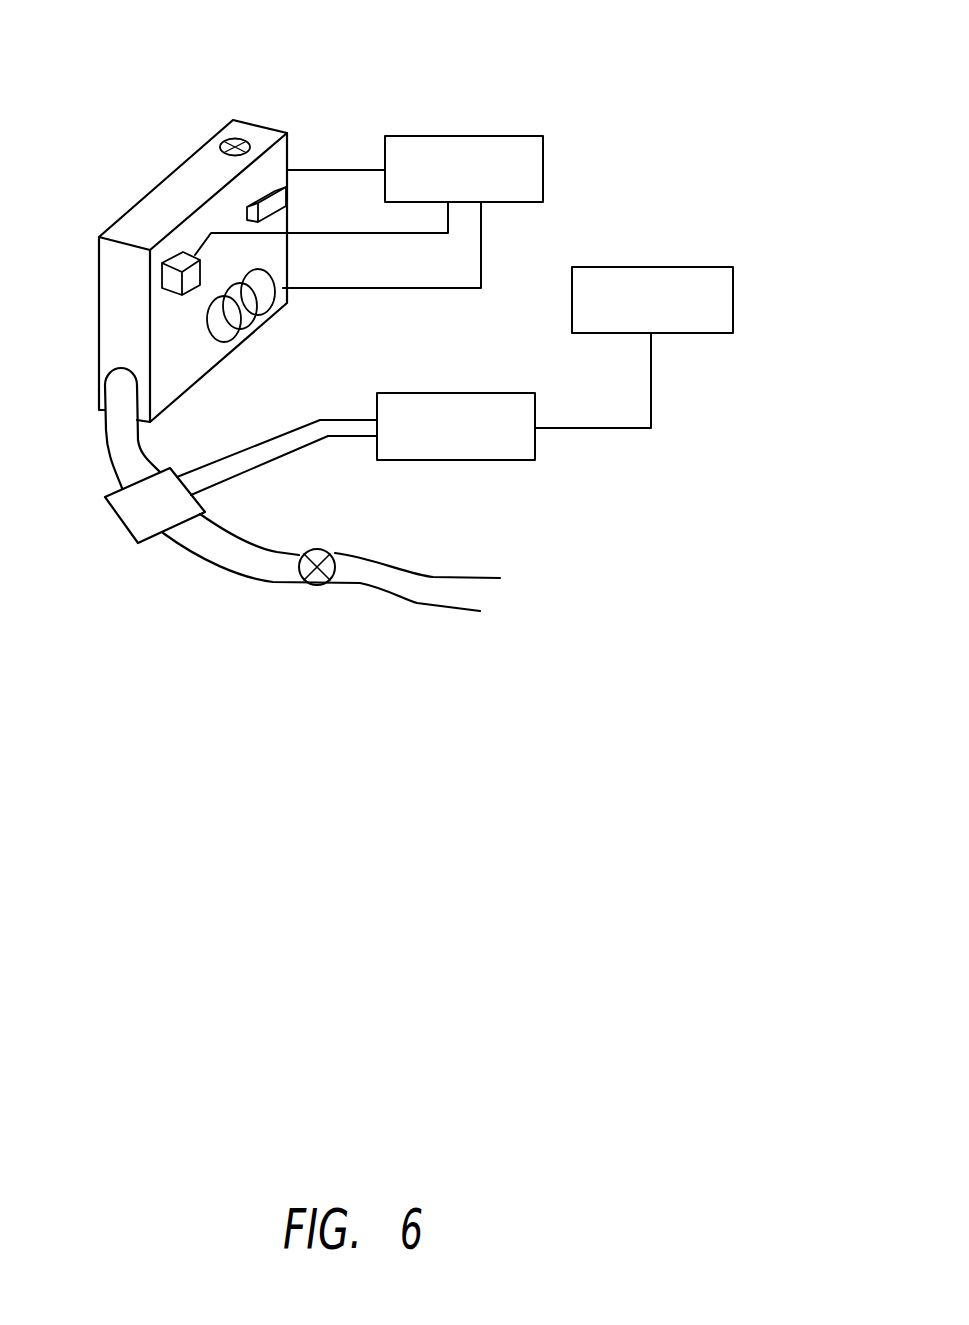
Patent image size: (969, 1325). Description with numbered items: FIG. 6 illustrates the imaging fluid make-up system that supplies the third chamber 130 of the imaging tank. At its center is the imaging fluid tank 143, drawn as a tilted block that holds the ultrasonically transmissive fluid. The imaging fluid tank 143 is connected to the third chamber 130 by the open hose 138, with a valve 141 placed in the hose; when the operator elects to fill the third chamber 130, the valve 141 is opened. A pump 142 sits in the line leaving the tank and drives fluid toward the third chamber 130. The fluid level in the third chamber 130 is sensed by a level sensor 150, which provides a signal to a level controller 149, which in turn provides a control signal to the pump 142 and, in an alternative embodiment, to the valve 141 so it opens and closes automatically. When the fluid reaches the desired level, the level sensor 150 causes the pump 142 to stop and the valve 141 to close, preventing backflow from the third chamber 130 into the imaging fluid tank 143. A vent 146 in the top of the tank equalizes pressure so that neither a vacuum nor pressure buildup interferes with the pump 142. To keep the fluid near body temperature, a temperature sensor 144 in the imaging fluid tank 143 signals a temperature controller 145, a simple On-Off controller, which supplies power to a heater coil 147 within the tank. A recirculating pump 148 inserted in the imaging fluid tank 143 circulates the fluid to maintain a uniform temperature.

The third chamber 130 is at (601, 598).
The open hose 138 is at (398, 580).
The valve 141 is at (318, 551).
The pump 142 is at (135, 513).
The imaging fluid tank 143 is at (148, 222).
The temperature sensor 144 is at (250, 197).
The temperature controller 145 is at (525, 135).
The vent 146 is at (238, 140).
The heater coil 147 is at (262, 315).
The recirculating pump 148 is at (173, 282).
The level controller 149 is at (448, 393).
The level sensor 150 is at (733, 300).